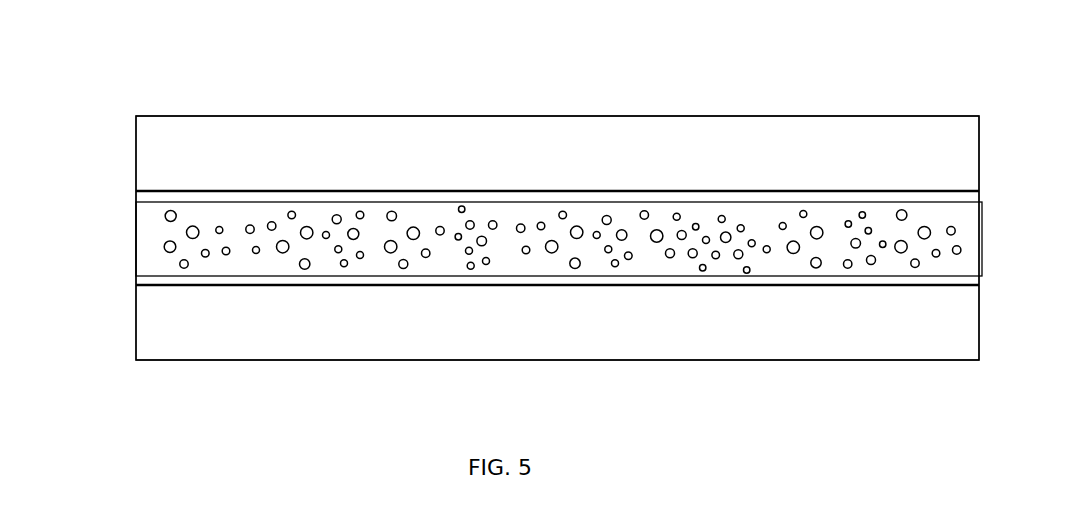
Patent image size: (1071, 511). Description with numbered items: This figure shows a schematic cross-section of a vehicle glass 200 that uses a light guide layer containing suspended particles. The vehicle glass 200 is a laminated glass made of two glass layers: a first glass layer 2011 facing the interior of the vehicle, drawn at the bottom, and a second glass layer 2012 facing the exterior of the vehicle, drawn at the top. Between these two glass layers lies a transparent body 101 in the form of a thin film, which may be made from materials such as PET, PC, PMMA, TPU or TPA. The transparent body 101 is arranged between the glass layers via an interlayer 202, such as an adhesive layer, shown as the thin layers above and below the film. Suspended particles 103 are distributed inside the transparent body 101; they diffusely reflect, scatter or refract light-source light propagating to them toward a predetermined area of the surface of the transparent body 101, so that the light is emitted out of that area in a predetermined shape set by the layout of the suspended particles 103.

The vehicle glass 200 is at (439, 61).
The second glass layer 2012 is at (320, 150).
The first glass layer 2011 is at (360, 350).
The interlayer 202 is at (143, 192).
The transparent body 101 is at (647, 209).
The suspended particles 103 is at (802, 211).